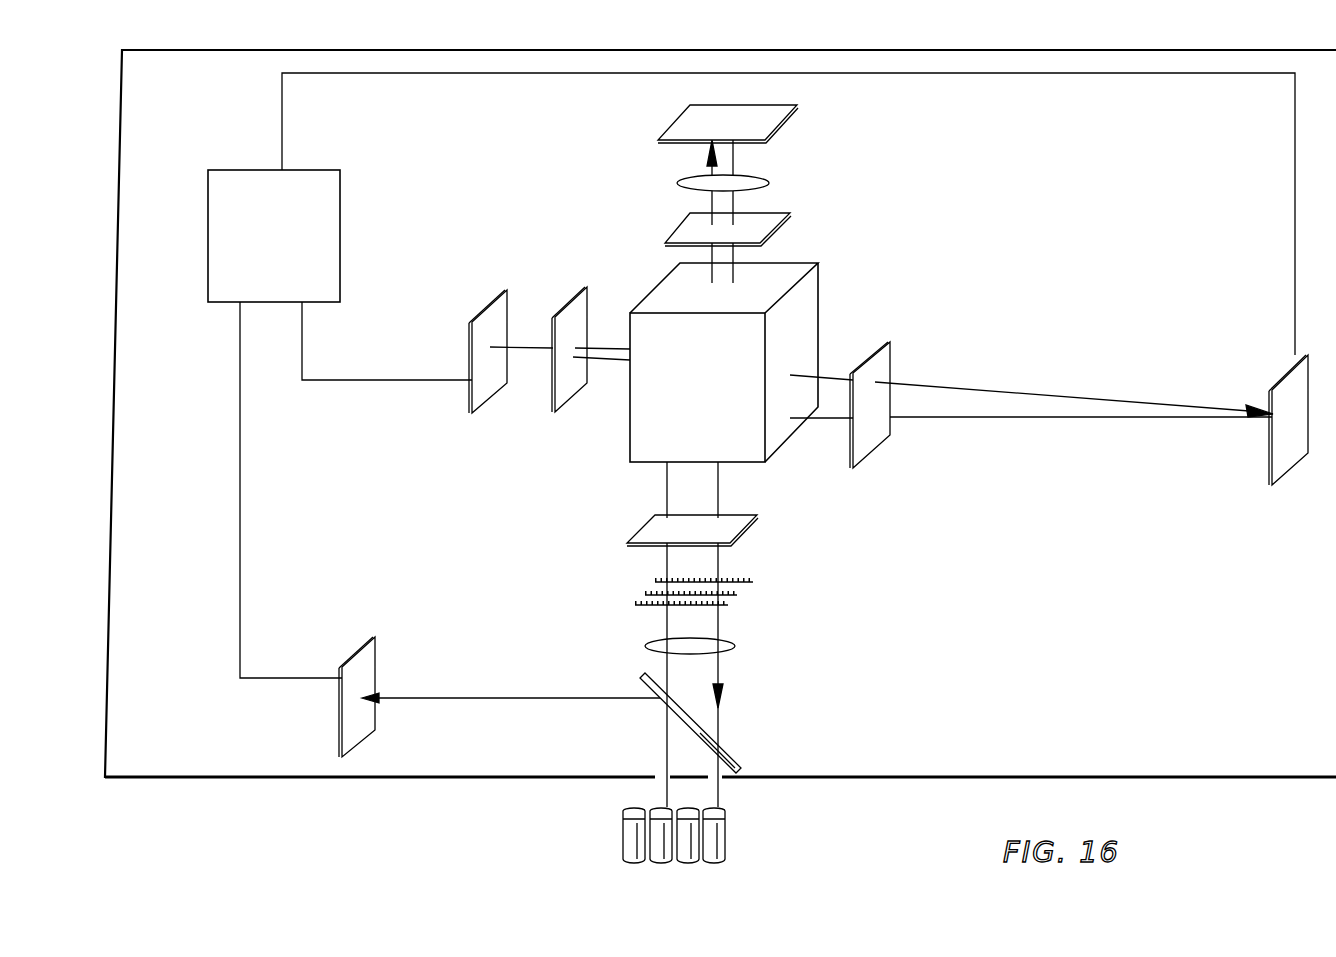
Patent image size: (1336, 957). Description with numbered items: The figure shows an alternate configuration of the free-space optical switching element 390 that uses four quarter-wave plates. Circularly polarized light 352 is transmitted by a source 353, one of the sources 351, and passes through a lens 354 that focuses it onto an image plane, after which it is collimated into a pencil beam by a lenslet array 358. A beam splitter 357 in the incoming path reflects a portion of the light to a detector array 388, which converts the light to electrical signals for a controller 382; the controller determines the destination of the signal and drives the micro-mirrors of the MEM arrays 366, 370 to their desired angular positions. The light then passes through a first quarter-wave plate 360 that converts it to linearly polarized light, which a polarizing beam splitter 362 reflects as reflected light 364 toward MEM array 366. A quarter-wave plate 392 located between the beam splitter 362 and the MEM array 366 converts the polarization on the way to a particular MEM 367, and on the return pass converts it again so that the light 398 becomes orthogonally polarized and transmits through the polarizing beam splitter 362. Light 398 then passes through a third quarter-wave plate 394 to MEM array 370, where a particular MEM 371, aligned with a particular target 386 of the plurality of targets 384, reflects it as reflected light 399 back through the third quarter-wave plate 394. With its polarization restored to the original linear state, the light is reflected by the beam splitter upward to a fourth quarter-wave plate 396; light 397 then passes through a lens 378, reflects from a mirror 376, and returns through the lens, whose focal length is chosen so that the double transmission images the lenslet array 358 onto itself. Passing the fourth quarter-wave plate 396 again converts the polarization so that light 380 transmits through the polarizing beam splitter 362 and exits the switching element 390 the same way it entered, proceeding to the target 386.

The switching element 390 is at (946, 37).
The controller 382 is at (292, 241).
The mirror 376 is at (780, 112).
The lens 378 is at (776, 180).
The light 397 is at (712, 205).
The fourth λ/4 plate 396 is at (780, 218).
The polarizing beam splitter 362 is at (785, 447).
The MEM array 366 is at (472, 400).
The MEM 367 is at (493, 340).
The λ/4 plate 392 is at (547, 403).
The reflected light 364 is at (605, 347).
The third λ/4 plate 394 is at (892, 358).
The light 398 is at (1073, 398).
The reflected light 399 is at (1028, 422).
The MEM 371 is at (1270, 408).
The MEM array 370 is at (1270, 460).
The light 380 is at (718, 623).
The λ/4 plate 360 is at (635, 530).
The lenslet array 358 is at (645, 589).
The lens 354 is at (735, 643).
The circularly polarized light 352 is at (663, 663).
The beam splitter 357 is at (730, 755).
The detector array 388 is at (378, 637).
The sources 351 is at (612, 843).
The source 353 is at (655, 800).
The targets 384 is at (743, 843).
The target 386 is at (720, 800).